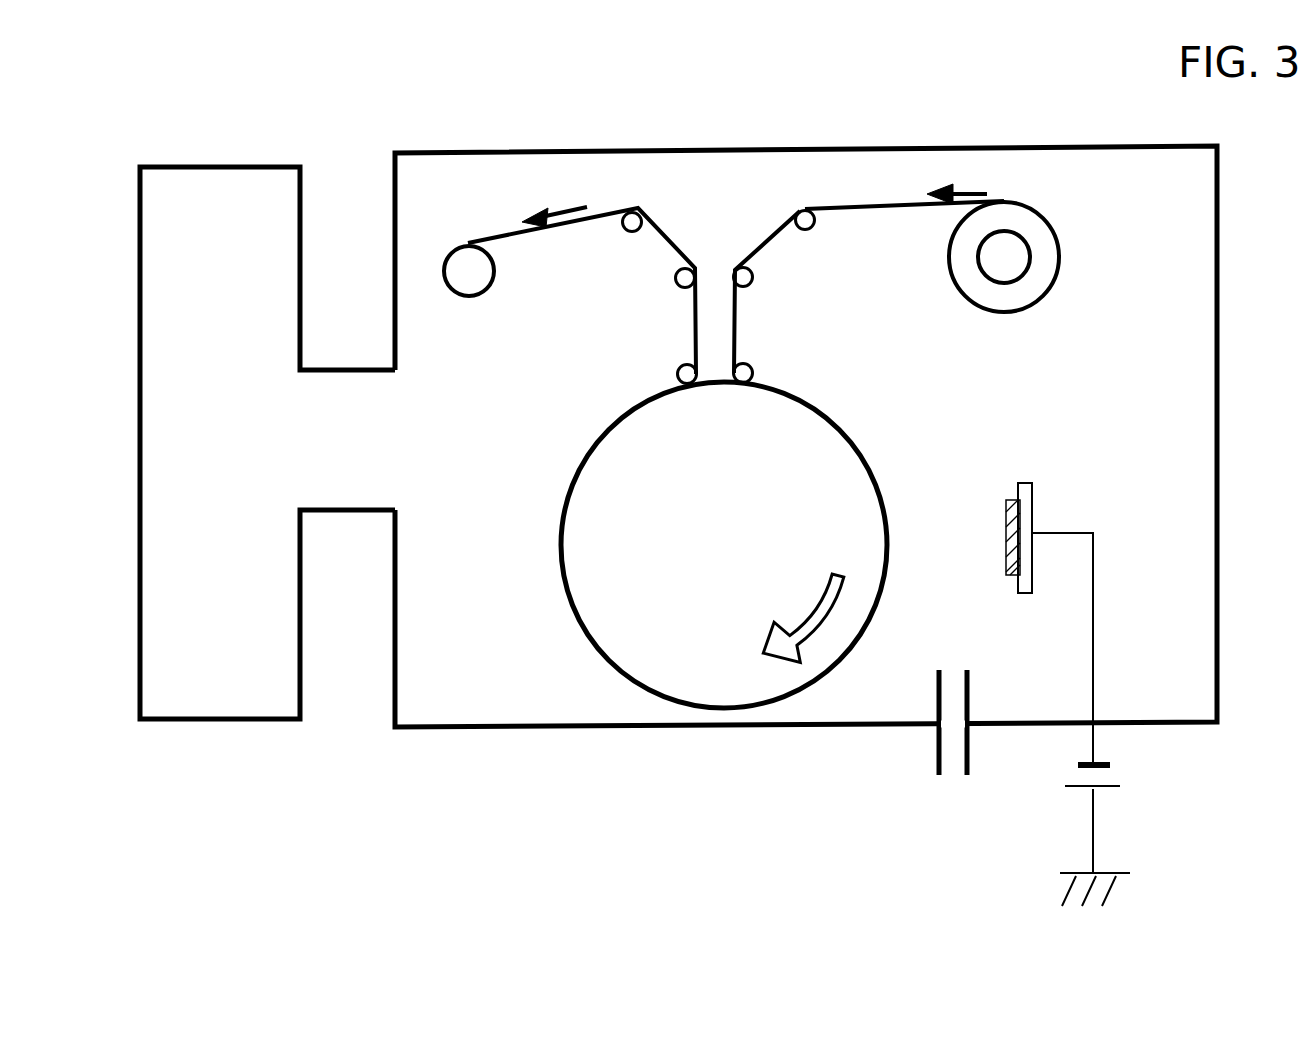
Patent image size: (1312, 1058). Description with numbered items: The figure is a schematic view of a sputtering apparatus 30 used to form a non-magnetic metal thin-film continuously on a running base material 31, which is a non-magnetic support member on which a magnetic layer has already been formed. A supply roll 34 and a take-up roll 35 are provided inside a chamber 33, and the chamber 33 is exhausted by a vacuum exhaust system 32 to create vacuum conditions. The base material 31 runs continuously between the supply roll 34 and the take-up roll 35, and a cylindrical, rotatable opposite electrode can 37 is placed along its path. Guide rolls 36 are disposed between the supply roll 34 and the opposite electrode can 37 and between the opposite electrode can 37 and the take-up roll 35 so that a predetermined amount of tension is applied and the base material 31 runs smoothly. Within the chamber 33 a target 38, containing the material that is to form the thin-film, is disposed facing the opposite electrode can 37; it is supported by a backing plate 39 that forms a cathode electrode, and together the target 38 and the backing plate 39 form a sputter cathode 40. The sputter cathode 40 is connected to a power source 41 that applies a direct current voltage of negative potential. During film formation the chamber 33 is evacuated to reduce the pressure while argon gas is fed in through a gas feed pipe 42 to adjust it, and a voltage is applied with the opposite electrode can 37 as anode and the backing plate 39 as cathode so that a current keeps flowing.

The sputtering apparatus 30 is at (1211, 924).
The base material 31 is at (862, 203).
The vacuum exhaust system 32 is at (186, 687).
The chamber 33 is at (1172, 288).
The supply roll 34 is at (1037, 233).
The take-up roll 35 is at (467, 265).
The guide rolls 36 is at (630, 232).
The opposite electrode can 37 is at (622, 633).
The target 38 is at (1003, 512).
The backing plate 39 is at (1017, 507).
The sputter cathode 40 is at (1057, 463).
The power source 41 is at (1105, 664).
The gas feed pipe 42 is at (938, 750).